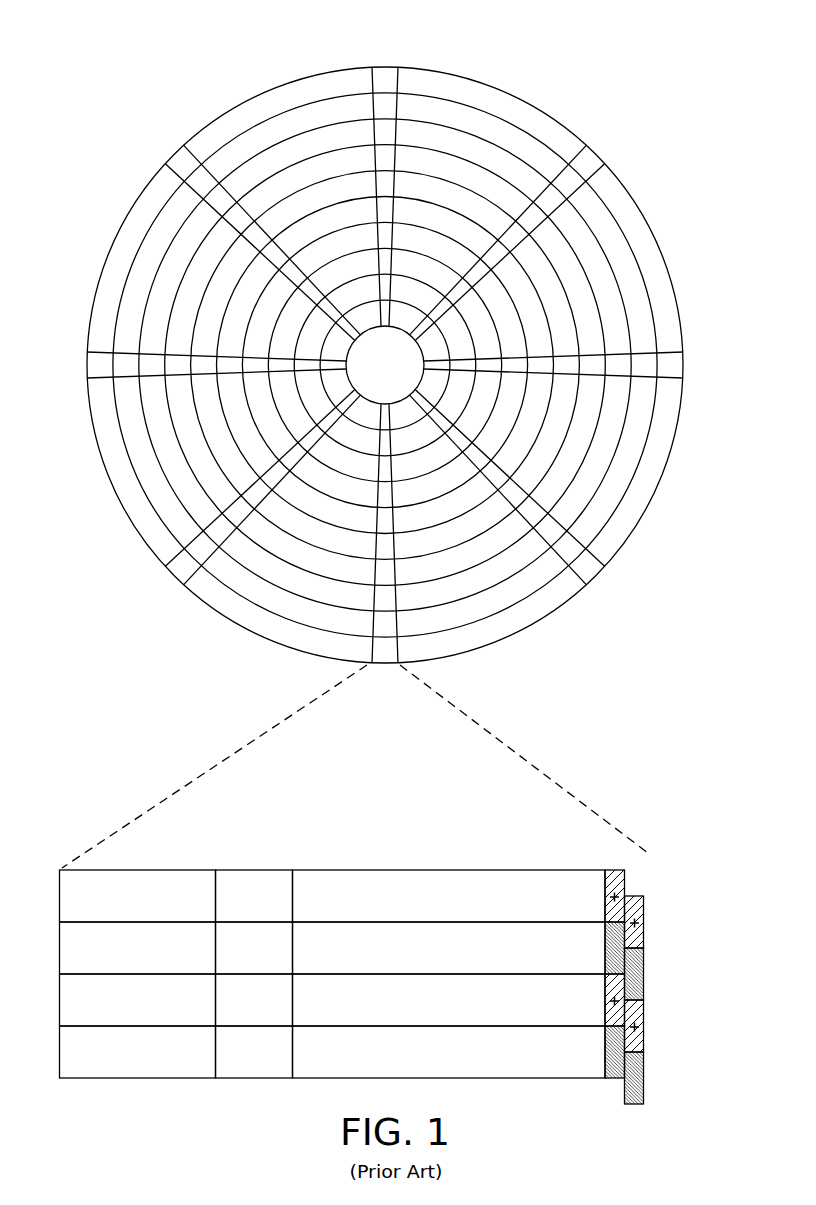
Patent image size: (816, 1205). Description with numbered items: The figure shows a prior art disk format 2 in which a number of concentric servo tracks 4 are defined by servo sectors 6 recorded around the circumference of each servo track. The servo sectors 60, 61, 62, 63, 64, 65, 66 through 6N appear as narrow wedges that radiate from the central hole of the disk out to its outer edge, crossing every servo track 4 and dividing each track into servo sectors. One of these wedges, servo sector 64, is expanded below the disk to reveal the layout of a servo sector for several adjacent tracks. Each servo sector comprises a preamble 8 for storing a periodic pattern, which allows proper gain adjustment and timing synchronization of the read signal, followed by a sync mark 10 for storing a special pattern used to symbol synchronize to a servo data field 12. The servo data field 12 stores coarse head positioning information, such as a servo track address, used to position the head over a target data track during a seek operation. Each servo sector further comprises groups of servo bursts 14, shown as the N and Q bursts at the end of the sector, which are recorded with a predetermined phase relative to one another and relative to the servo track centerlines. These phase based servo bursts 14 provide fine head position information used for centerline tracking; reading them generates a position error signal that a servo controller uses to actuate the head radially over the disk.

The disk format 2 is at (160, 66).
The servo tracks 4 is at (485, 127).
The servo sectors 6 is at (385, 375).
The servo sector 6_0 60 is at (385, 77).
The servo sector 6_1 61 is at (588, 162).
The servo sector 6_2 62 is at (684, 363).
The servo sector 6_3 63 is at (588, 571).
The servo sector 6_4 64 is at (248, 728).
The servo sector 6_5 65 is at (178, 572).
The servo sector 6_6 66 is at (92, 363).
The servo sector 6_N 6N is at (180, 159).
The preamble 8 is at (145, 870).
The sync mark 10 is at (256, 870).
The servo data field 12 is at (435, 870).
The servo bursts 14 is at (647, 865).